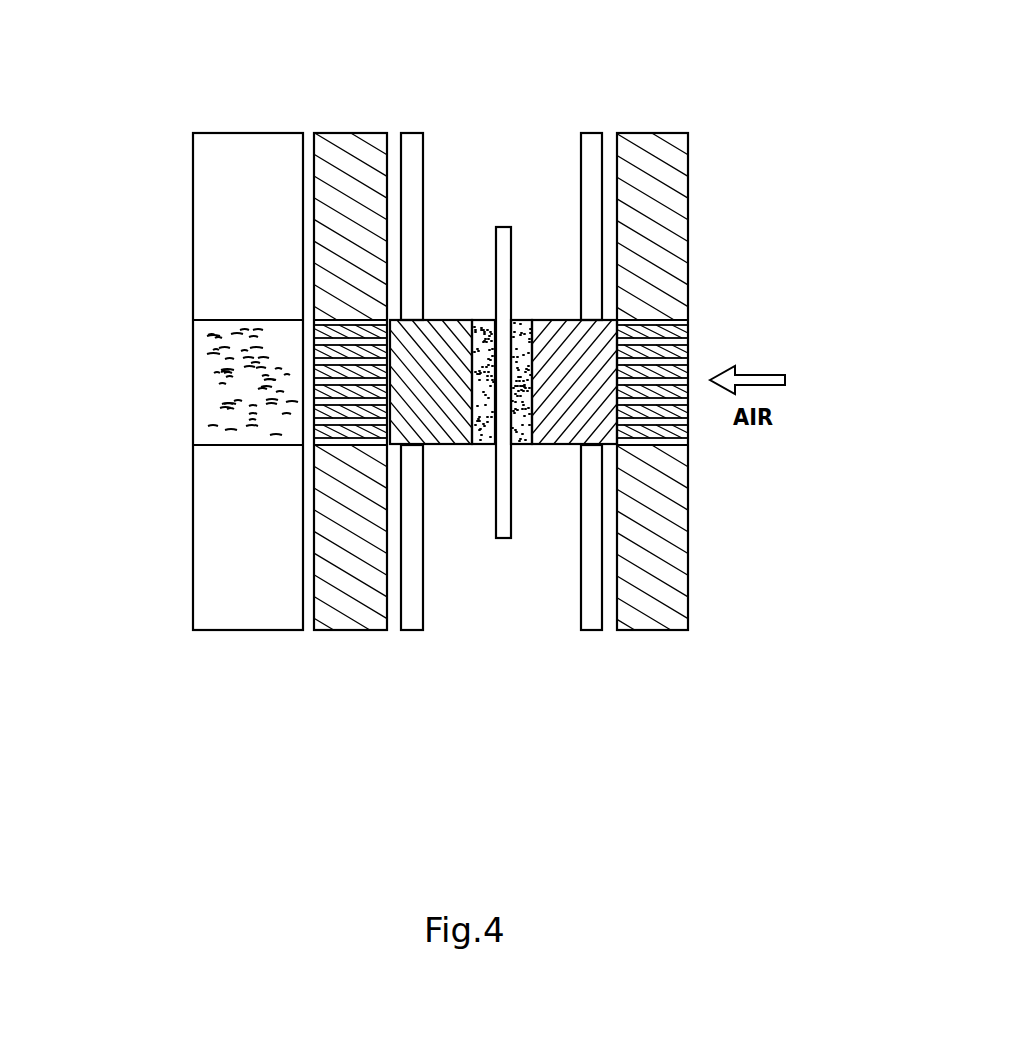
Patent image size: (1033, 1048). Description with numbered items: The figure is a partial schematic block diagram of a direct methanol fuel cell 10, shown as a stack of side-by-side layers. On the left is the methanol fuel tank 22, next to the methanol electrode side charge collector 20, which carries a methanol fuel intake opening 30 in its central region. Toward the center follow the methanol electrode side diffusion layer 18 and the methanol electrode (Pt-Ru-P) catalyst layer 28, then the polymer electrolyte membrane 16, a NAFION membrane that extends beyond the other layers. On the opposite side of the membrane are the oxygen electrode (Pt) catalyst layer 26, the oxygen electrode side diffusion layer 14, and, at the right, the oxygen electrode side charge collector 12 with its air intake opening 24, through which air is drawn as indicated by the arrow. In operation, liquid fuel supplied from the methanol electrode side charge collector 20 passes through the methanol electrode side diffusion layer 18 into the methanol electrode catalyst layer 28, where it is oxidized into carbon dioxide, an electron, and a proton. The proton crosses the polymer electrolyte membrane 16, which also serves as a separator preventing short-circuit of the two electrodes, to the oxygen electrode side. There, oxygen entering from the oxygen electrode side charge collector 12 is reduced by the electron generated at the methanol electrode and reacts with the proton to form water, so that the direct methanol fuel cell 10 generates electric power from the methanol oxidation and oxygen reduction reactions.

The direct methanol fuel cell 10 is at (200, 100).
The oxygen electrode side charge collector 12 is at (650, 632).
The oxygen electrode side diffusion layer 14 is at (549, 446).
The polymer electrolyte membrane 16 is at (510, 227).
The methanol electrode side diffusion layer 18 is at (445, 446).
The methanol electrode side charge collector 20 is at (345, 632).
The methanol fuel tank 22 is at (213, 357).
The air intake opening 24 is at (670, 324).
The oxygen electrode (Pt) catalyst layer 26 is at (522, 320).
The methanol electrode (Pt-Ru-P) catalyst layer 28 is at (480, 320).
The methanol fuel intake opening 30 is at (330, 438).